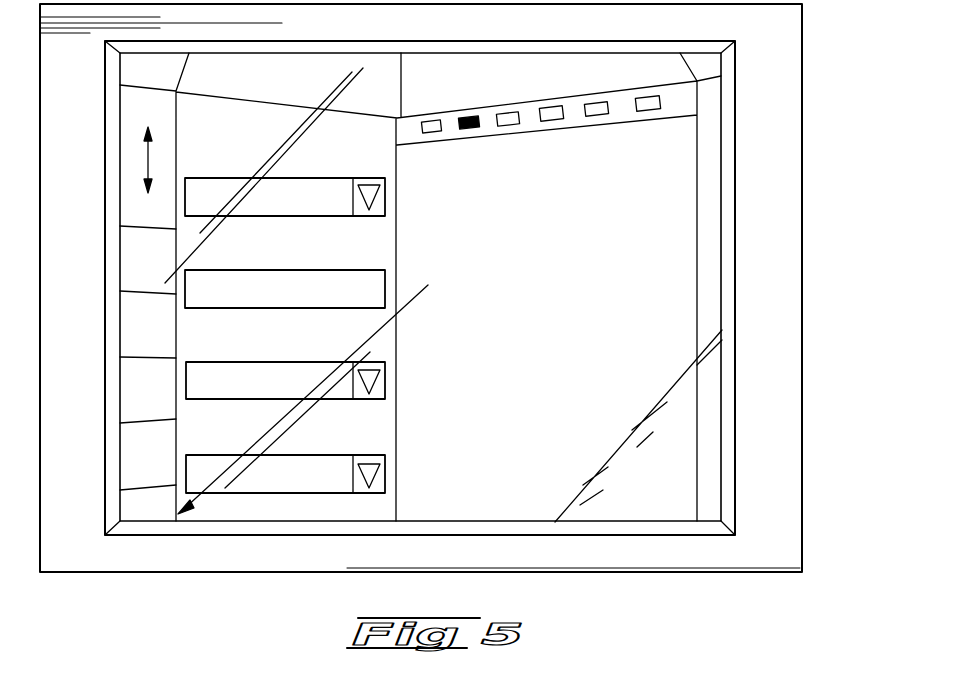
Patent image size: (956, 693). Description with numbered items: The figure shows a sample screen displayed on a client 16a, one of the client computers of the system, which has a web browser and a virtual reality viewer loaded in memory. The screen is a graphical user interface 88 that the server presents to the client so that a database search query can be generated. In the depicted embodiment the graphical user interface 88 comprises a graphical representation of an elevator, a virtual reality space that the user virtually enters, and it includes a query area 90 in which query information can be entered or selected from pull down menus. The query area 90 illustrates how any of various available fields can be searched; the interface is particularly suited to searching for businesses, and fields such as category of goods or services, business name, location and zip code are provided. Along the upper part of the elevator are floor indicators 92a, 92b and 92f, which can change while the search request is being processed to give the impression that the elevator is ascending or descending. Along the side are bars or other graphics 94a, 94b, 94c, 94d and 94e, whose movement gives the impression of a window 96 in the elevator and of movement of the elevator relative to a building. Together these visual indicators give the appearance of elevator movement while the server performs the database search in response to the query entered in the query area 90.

The client 16a is at (803, 211).
The graphical user interface 88 is at (730, 463).
The query area 90 is at (396, 248).
The floor indicator 92a is at (428, 121).
The floor indicator 92b is at (468, 128).
The floor indicator 92f is at (650, 110).
The bar 94a is at (137, 230).
The bar 94b is at (136, 293).
The bar 94c is at (140, 357).
The bar 94d is at (143, 419).
The bar 94e is at (137, 487).
The window 96 is at (190, 510).